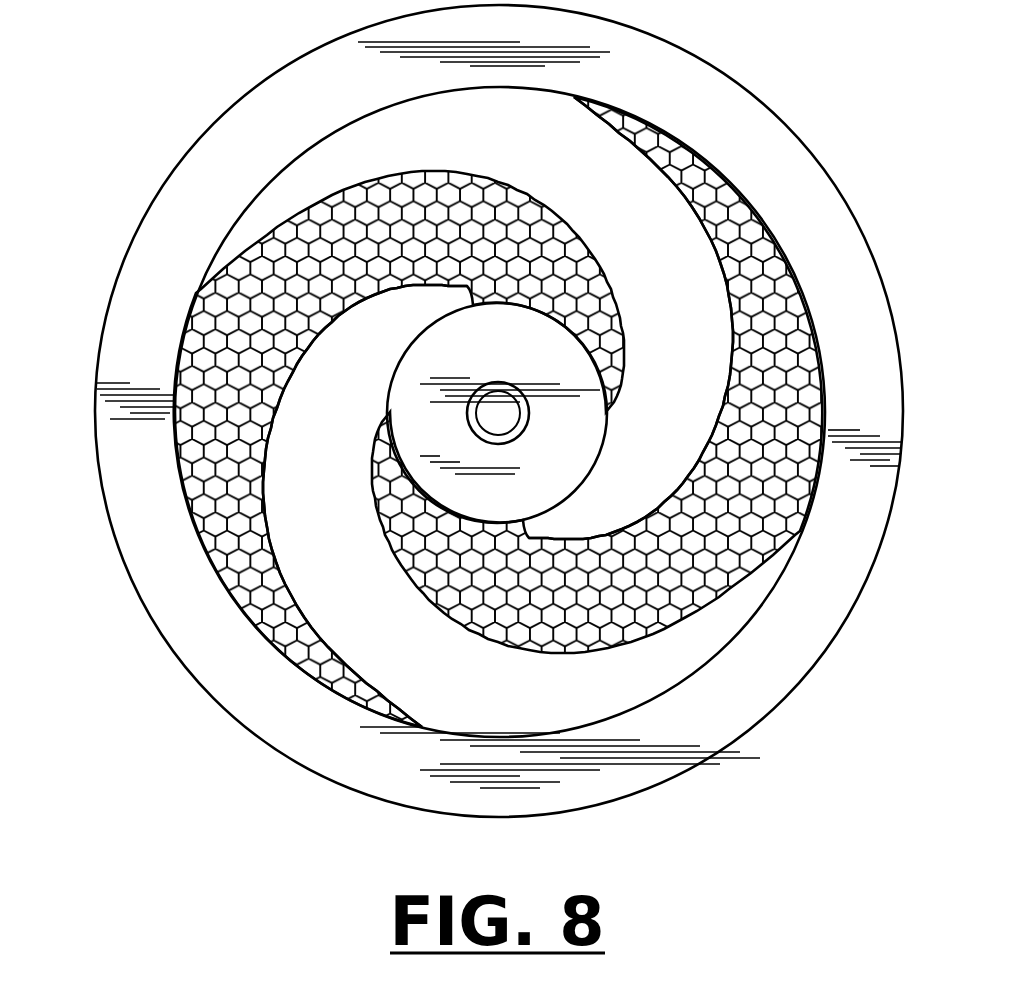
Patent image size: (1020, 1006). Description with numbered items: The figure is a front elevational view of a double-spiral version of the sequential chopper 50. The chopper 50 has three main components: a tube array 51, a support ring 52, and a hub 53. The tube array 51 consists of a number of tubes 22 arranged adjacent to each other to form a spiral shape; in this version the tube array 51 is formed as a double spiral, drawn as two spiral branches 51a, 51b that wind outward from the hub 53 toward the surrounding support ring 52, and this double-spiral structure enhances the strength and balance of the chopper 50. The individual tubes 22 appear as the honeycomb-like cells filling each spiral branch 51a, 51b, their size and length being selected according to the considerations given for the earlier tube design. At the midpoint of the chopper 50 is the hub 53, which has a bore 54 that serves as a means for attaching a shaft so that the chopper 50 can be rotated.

The chopper 50 is at (203, 113).
The support ring 52 is at (704, 78).
The tube 22 is at (787, 423).
The tube array 51 is at (302, 588).
The first spiral of tube array 51a is at (773, 247).
The second spiral of tube array 51b is at (186, 346).
The hub 53 is at (518, 358).
The bore 54 is at (480, 423).